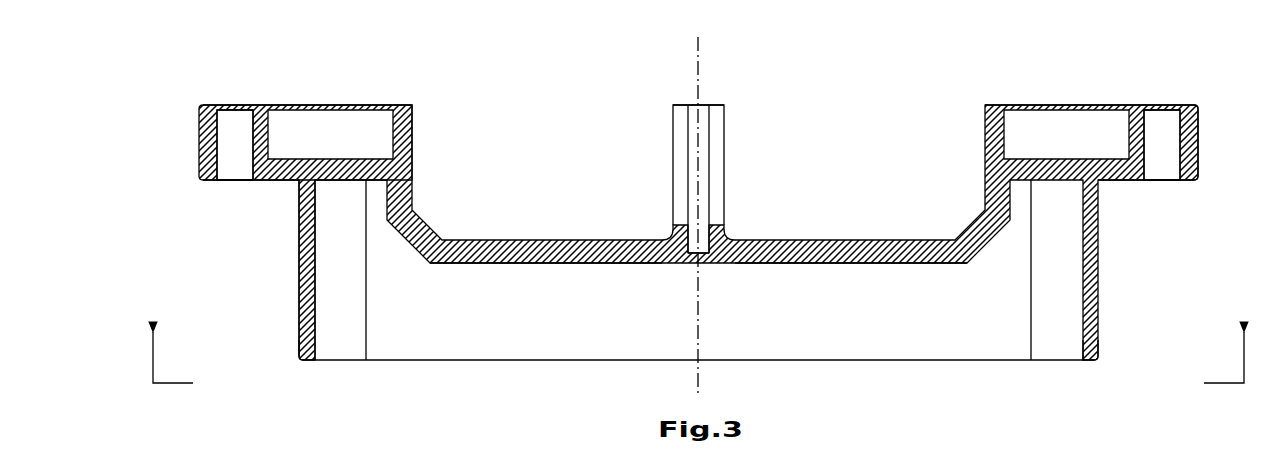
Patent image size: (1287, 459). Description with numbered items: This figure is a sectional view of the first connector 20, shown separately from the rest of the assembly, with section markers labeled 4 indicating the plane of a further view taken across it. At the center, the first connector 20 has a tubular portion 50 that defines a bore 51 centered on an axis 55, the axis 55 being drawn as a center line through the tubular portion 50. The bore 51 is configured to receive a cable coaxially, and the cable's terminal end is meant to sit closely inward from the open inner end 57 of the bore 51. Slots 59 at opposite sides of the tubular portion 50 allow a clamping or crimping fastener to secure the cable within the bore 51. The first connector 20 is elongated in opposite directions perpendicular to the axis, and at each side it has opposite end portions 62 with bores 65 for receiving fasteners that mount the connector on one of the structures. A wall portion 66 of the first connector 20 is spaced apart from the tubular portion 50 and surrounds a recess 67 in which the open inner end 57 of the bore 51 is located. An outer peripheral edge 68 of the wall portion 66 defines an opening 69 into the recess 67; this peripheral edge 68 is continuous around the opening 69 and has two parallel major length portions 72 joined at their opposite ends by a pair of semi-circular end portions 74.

The first connector 20 is at (503, 80).
The end portions 62 is at (199, 140).
The bores 65 is at (235, 183).
The wall portion 66 is at (298, 293).
The recess 67 is at (557, 318).
The outer peripheral edge 68 is at (445, 363).
The opening 69 is at (556, 360).
The major length portions 72 is at (873, 363).
The semi-circular end portions 74 is at (305, 363).
The tubular portion 50 is at (673, 123).
The slots 59 is at (680, 178).
The bore 51 is at (689, 95).
The open inner end 57 is at (690, 265).
The axis 55 is at (698, 55).
The section line 4- 4 is at (700, 341).